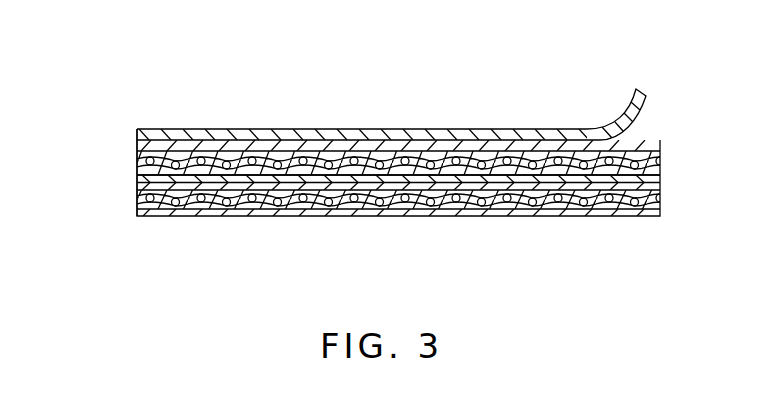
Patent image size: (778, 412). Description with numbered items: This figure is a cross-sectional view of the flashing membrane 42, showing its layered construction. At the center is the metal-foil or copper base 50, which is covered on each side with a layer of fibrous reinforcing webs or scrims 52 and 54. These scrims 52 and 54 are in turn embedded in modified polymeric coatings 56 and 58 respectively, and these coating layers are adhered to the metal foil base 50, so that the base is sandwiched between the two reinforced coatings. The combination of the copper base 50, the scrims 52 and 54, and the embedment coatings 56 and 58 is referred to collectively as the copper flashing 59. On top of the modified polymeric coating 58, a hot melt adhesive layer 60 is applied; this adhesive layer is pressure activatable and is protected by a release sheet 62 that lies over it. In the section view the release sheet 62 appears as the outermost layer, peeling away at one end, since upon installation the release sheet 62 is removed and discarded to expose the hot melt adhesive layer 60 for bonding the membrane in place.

The laminated composite material 42 is at (408, 120).
The metal-foil or copper base 50 is at (138, 183).
The fibrous reinforcing web or scrim 52 is at (167, 213).
The fibrous reinforcing web or scrim 54 is at (170, 160).
The modified polymeric coating 56 is at (137, 215).
The modified polymeric coating 58 is at (192, 147).
The copper flashing 59 is at (513, 163).
The hot melt adhesive layer 60 is at (137, 146).
The release sheet 62 is at (300, 136).